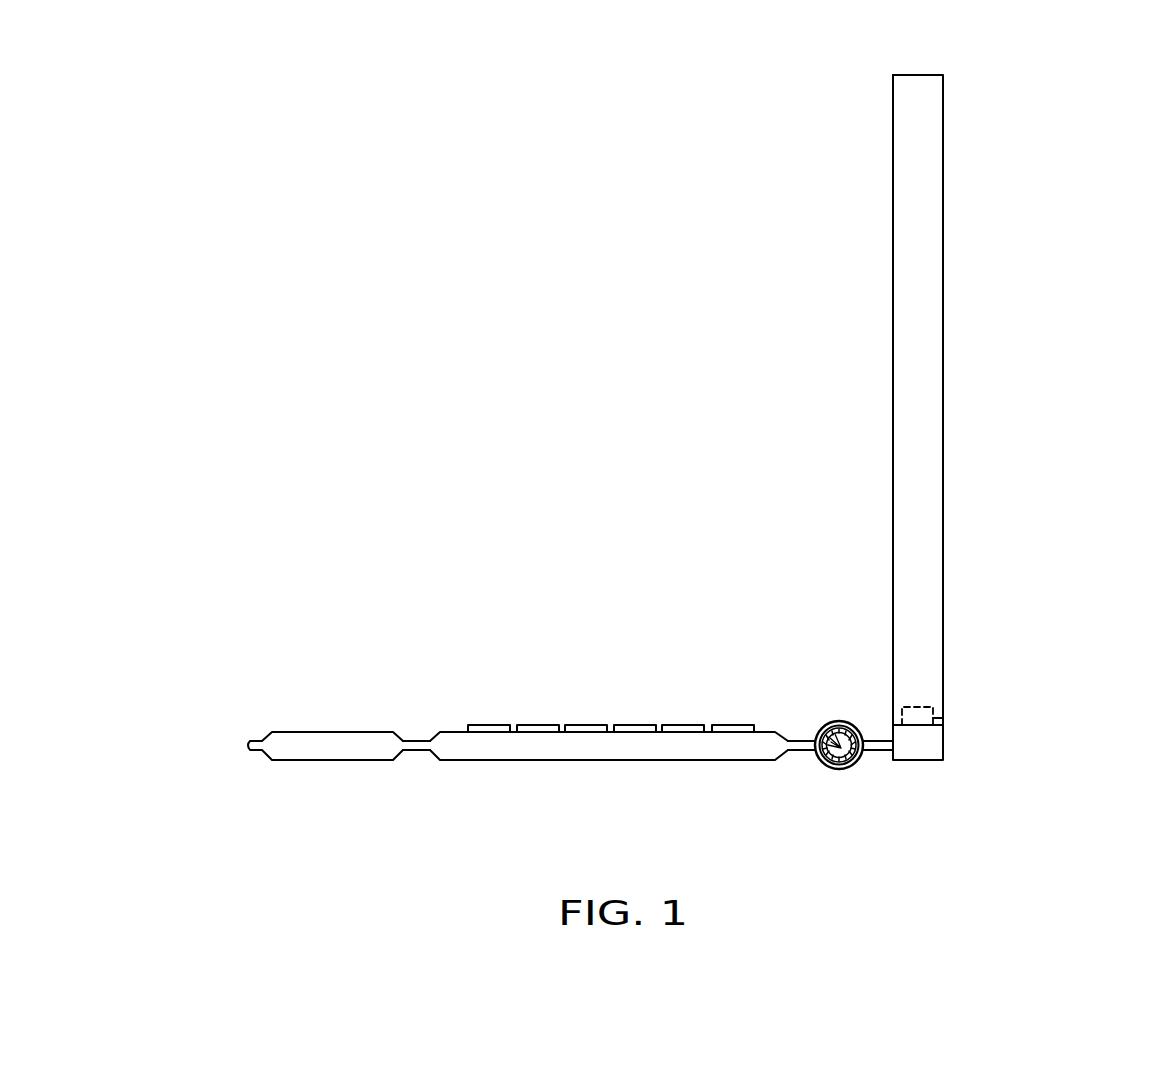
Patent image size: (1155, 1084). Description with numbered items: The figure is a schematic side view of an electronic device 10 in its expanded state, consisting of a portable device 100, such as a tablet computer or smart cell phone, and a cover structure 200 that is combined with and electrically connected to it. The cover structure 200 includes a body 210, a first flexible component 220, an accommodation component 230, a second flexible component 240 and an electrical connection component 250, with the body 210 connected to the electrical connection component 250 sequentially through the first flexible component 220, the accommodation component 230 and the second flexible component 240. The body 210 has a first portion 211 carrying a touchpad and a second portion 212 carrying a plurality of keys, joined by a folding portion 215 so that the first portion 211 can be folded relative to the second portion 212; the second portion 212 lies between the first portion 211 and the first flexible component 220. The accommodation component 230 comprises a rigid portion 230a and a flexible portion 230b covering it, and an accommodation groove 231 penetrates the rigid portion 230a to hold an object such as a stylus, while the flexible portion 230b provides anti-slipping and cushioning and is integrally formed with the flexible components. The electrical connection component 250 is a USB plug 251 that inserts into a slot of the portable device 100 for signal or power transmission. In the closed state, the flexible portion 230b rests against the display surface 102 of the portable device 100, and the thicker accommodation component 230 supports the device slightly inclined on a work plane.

The electronic device 10 is at (1152, 807).
The portable device 100 is at (943, 473).
The display surface 102 is at (892, 284).
The cover structure 200 is at (518, 742).
The body 210 is at (518, 710).
The first portion 211 is at (327, 742).
The second portion 212 is at (557, 750).
The folding portion 215 is at (417, 743).
The first flexible component 220 is at (795, 752).
The accommodation component 230 is at (836, 741).
The rigid portion 230a is at (835, 764).
The flexible portion 230b is at (842, 724).
The accommodation groove 231 is at (826, 733).
The second flexible component 240 is at (872, 752).
The electrical connection component 250 is at (935, 748).
The USB plug 251 is at (948, 713).